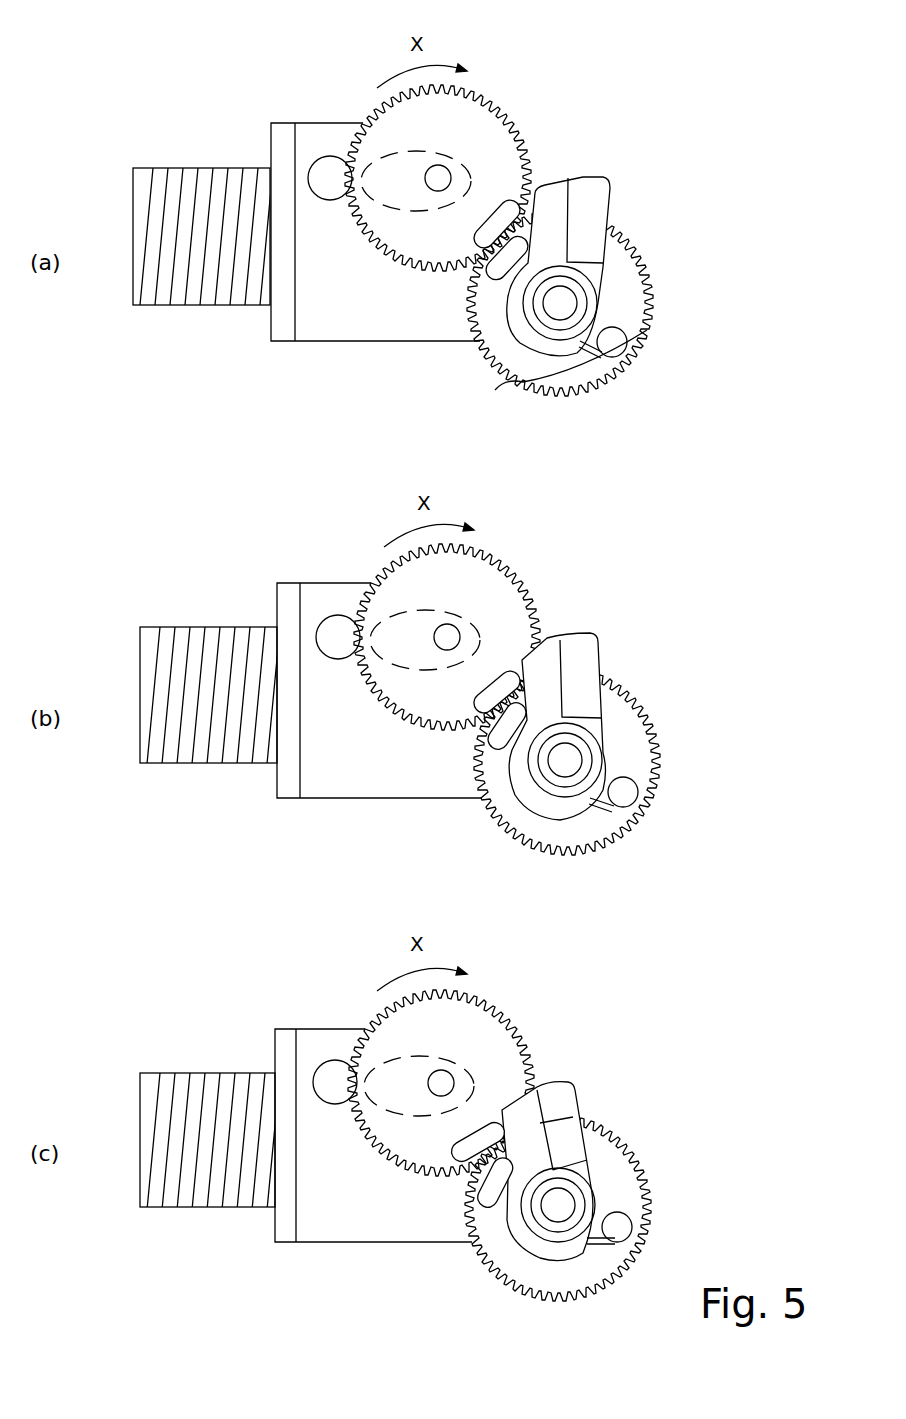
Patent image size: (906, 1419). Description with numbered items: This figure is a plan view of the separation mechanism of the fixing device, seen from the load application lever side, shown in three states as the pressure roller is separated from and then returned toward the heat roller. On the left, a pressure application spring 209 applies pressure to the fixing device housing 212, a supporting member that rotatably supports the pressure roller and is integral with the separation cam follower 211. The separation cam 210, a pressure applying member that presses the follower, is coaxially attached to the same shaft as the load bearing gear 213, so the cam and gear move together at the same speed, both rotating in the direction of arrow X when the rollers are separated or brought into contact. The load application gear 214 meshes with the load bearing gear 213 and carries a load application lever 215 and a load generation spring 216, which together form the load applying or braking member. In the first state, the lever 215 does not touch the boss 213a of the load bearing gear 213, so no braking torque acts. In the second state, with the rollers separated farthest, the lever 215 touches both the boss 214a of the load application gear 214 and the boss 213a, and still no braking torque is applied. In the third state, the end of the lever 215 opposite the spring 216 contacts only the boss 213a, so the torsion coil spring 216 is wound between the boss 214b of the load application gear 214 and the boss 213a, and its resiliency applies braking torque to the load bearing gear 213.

The pressure application spring 209 is at (197, 265).
The separation cam 210 is at (400, 167).
The separation cam follower 211 is at (317, 177).
The fixing device housing 212 is at (320, 315).
The load bearing gear 213 is at (465, 125).
The boss of the load bearing gear 213a is at (535, 193).
The load application gear 214 is at (614, 278).
The boss of the load application gear 214a is at (492, 275).
The boss of the load application gear 214b is at (615, 340).
The load application lever 215 is at (584, 196).
The load generation spring 216 is at (545, 369).